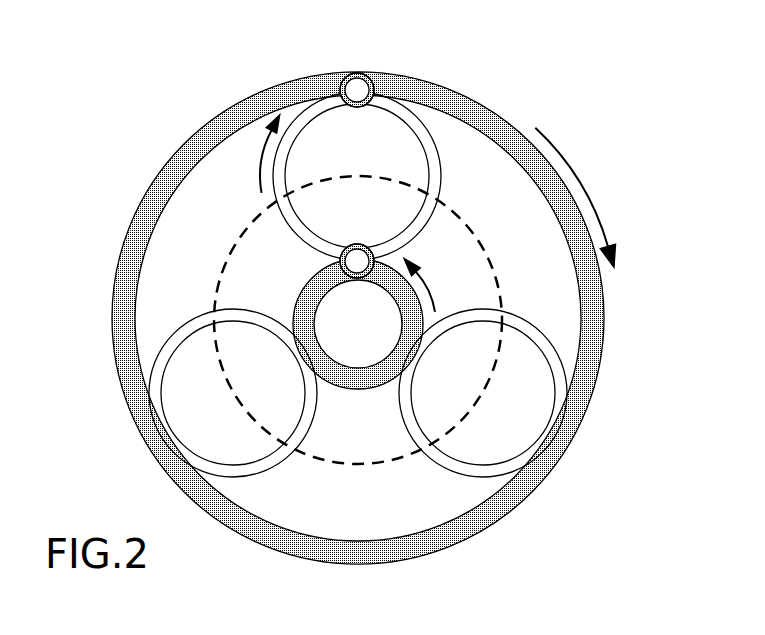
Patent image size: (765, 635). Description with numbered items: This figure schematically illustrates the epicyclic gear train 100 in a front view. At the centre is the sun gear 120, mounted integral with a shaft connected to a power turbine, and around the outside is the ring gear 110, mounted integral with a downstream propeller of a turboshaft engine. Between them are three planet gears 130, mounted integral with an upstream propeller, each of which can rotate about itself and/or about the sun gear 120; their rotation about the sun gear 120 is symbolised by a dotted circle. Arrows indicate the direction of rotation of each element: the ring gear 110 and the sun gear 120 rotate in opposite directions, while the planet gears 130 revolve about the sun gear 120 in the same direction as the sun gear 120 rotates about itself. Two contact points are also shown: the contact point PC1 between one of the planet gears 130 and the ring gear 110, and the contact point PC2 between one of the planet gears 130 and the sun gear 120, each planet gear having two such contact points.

The epicyclic gear train 100 is at (506, 77).
The ring gear 110 is at (241, 112).
The sun gear 120 is at (358, 389).
The planet gears 130 is at (540, 336).
The contact point PC1 is at (357, 90).
The contact point PC2 is at (357, 261).